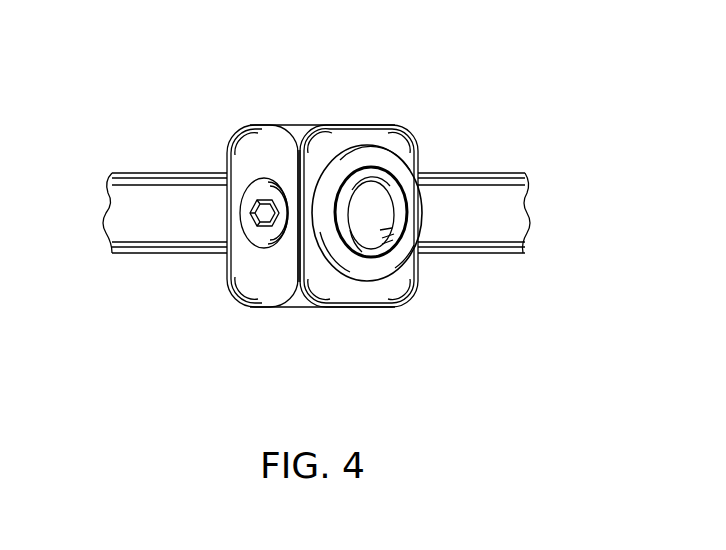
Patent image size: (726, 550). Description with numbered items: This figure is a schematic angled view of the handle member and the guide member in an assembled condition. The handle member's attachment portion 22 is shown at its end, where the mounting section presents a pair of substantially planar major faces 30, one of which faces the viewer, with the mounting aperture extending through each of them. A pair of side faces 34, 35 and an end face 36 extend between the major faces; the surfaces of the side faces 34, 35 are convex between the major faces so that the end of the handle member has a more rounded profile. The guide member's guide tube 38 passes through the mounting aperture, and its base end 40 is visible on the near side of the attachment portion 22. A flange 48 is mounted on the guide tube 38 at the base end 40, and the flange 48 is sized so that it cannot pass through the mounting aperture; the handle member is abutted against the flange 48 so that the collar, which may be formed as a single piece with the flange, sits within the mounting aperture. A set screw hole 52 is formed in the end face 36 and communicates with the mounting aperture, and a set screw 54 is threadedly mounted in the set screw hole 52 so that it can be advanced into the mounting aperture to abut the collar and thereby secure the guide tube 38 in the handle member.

The attachment portion 22 is at (505, 220).
The major face 30 is at (322, 142).
The side face 34 is at (298, 123).
The side face 35 is at (333, 308).
The end face 36 is at (265, 275).
The guide tube 38 is at (112, 175).
The base end 40 is at (387, 177).
The flange 48 is at (387, 272).
The set screw hole 52 is at (263, 237).
The set screw 54 is at (263, 207).